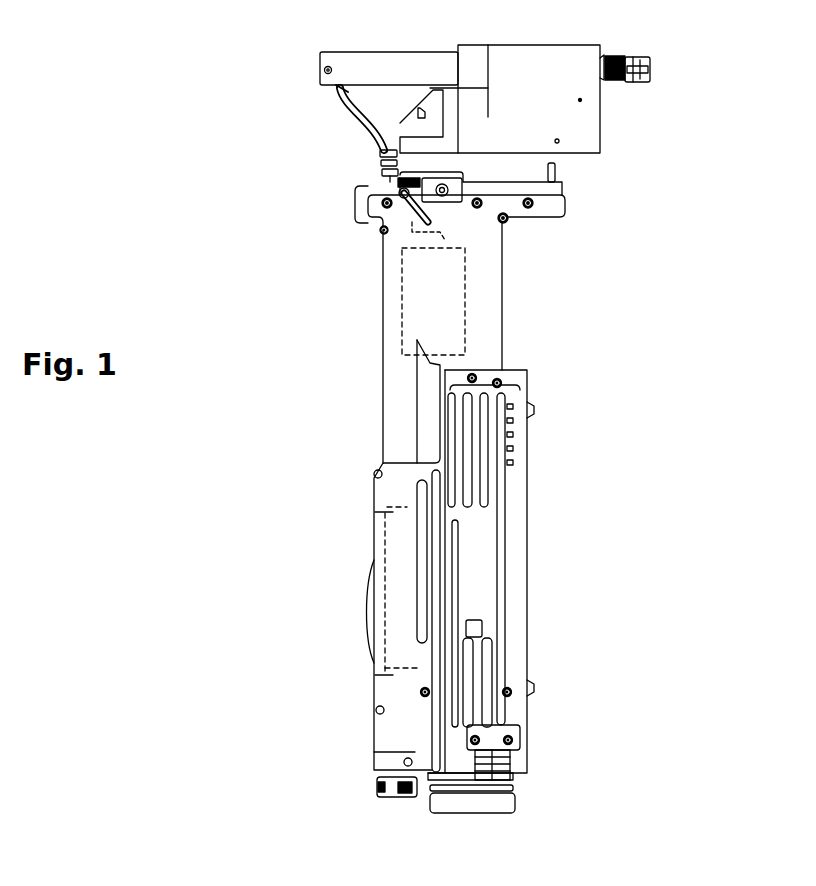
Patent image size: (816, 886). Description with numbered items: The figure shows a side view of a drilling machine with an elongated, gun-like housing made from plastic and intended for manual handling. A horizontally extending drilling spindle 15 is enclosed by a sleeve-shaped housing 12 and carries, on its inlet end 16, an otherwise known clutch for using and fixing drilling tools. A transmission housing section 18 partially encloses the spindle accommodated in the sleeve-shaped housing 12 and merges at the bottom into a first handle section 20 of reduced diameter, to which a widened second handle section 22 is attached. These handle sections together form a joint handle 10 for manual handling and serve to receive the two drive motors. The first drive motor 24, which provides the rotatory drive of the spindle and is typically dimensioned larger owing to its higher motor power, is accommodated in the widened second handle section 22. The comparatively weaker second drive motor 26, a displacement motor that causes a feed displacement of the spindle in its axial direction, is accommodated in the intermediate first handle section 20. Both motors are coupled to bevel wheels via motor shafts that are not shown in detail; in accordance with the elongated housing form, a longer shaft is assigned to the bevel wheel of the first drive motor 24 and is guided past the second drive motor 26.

The joint handle 10 is at (533, 468).
The sleeve-shaped housing 12 is at (377, 70).
The drilling spindle 15 is at (616, 50).
The inlet end 16 is at (650, 74).
The transmission housing section 18 is at (566, 112).
The first handle section 20 is at (482, 292).
The second handle section 22 is at (513, 585).
The first drive motor 24 is at (400, 625).
The second drive motor 26 is at (420, 312).